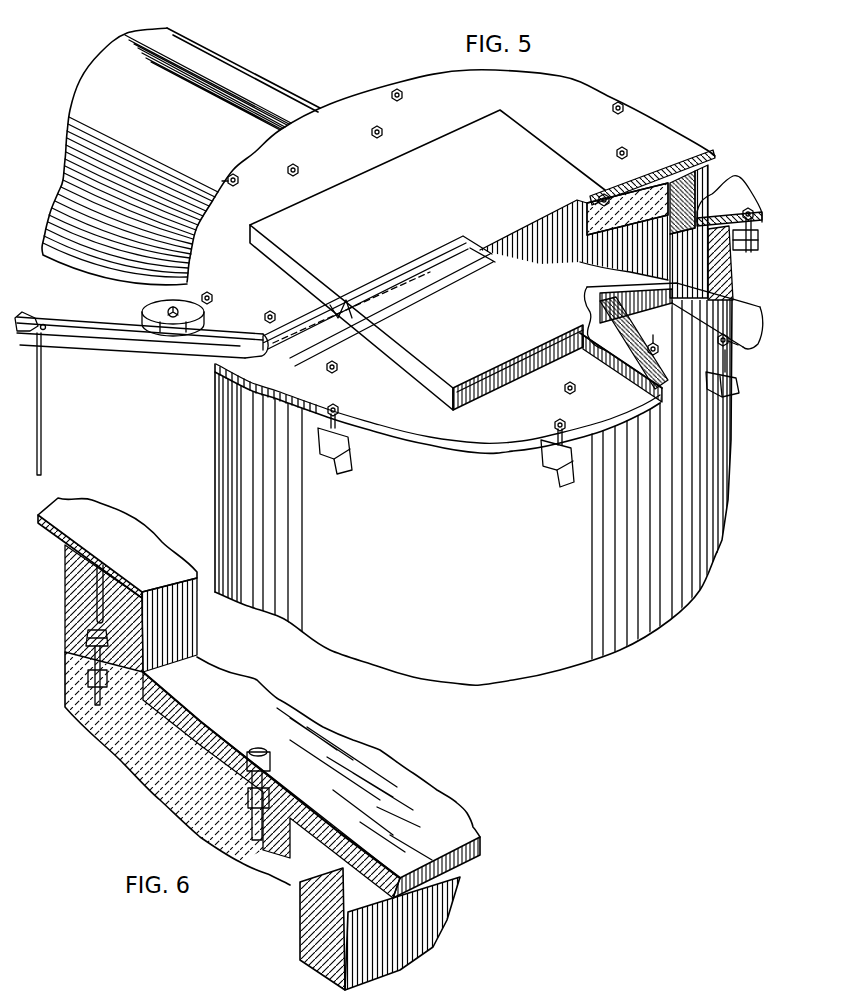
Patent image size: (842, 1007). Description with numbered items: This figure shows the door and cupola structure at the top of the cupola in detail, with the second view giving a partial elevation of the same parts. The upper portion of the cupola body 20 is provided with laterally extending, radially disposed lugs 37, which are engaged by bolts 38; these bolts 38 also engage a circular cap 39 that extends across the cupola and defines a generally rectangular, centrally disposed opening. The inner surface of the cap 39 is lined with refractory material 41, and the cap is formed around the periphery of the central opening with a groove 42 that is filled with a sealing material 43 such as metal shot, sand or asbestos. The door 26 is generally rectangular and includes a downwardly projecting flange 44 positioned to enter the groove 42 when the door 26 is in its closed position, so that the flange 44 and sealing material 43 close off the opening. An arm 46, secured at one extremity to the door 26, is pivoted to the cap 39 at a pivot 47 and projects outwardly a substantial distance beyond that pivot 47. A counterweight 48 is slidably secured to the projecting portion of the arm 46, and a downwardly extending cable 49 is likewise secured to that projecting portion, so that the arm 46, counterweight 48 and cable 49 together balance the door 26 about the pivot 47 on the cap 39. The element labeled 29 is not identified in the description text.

In FIG. 5, the cupola body 20 is at (718, 444).
In FIG. 5, the door 26 is at (540, 153).
In FIG. 6, the door 26 is at (447, 927).
In FIG. 5, the duct 29 is at (256, 91).
In FIG. 5, the lug 37 is at (737, 378).
In FIG. 5, the bolt 38 is at (397, 90).
In FIG. 5, the circular cap 39 is at (502, 432).
In FIG. 6, the circular cap 39 is at (334, 756).
In FIG. 5, the refractory material 41 is at (658, 167).
In FIG. 6, the refractory material 41 is at (207, 772).
In FIG. 5, the groove 42 is at (613, 178).
In FIG. 6, the groove 42 is at (122, 634).
In FIG. 6, the sealing material 43 is at (101, 562).
In FIG. 6, the flange 44 is at (121, 570).
In FIG. 5, the arm 46 is at (318, 333).
In FIG. 5, the pivot 47 is at (262, 334).
In FIG. 5, the counterweight 48 is at (160, 311).
In FIG. 5, the cable 49 is at (43, 413).